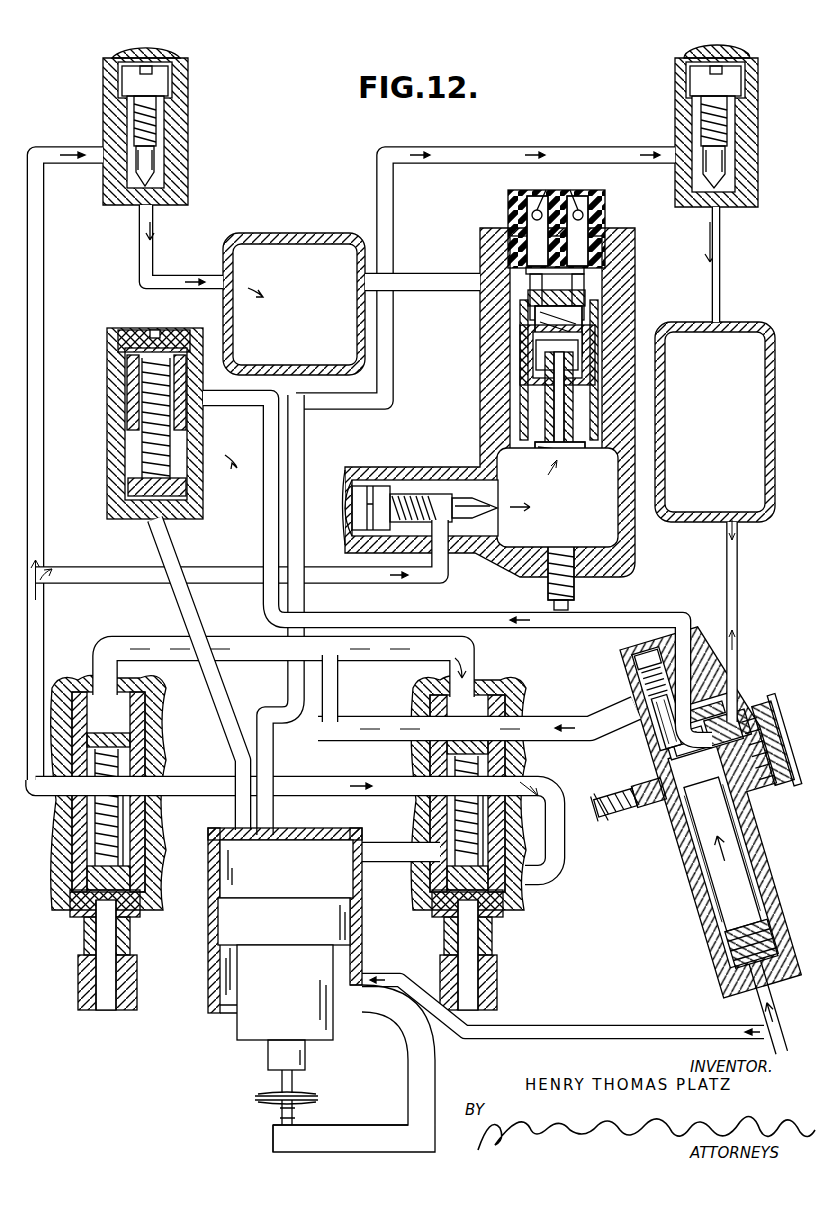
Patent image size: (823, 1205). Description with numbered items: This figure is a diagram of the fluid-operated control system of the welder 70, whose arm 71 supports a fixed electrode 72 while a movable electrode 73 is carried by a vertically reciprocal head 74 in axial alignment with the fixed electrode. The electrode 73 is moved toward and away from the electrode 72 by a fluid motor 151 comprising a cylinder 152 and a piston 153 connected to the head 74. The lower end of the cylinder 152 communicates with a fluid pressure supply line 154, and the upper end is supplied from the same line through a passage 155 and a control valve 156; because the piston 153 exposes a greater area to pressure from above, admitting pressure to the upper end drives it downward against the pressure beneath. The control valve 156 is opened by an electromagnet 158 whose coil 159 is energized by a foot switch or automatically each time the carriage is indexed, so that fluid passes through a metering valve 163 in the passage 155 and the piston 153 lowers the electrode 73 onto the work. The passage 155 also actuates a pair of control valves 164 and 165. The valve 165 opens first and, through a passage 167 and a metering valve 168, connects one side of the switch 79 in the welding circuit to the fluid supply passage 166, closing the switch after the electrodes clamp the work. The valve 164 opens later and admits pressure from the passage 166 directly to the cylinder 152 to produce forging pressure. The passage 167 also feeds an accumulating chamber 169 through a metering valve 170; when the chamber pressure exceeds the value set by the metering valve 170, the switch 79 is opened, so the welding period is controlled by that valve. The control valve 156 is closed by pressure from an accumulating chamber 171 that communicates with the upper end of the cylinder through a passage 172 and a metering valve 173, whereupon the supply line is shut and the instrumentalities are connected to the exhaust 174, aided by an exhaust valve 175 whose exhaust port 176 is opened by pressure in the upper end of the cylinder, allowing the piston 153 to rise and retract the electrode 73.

The welder 70 is at (205, 1116).
The arm 71 is at (335, 1142).
The fixed electrode 72 is at (282, 1118).
The movable electrode 73 is at (280, 1084).
The head 74 is at (258, 1018).
The switch 79 is at (486, 214).
The fluid motor 151 is at (203, 995).
The cylinder 152 is at (210, 920).
The piston 153 is at (273, 910).
The fluid pressure supply line 154 is at (562, 1024).
The passage 155 is at (220, 640).
The control valve 156 is at (776, 745).
The electromagnet 158 is at (615, 813).
The coil 159 is at (628, 802).
The metering valve 163 is at (630, 685).
The control valve 164 is at (517, 673).
The control valve 165 is at (158, 764).
The fluid supply passage 166 is at (360, 786).
The passage 167 is at (45, 645).
The metering valve 168 is at (424, 481).
The accumulating chamber 169 is at (290, 236).
The metering valve 170 is at (190, 128).
The accumulating chamber 171 is at (735, 320).
The passage 172 is at (500, 148).
The metering valve 173 is at (678, 90).
The exhaust 174 is at (755, 722).
The exhaust valve 175 is at (114, 456).
The exhaust port 176 is at (196, 460).